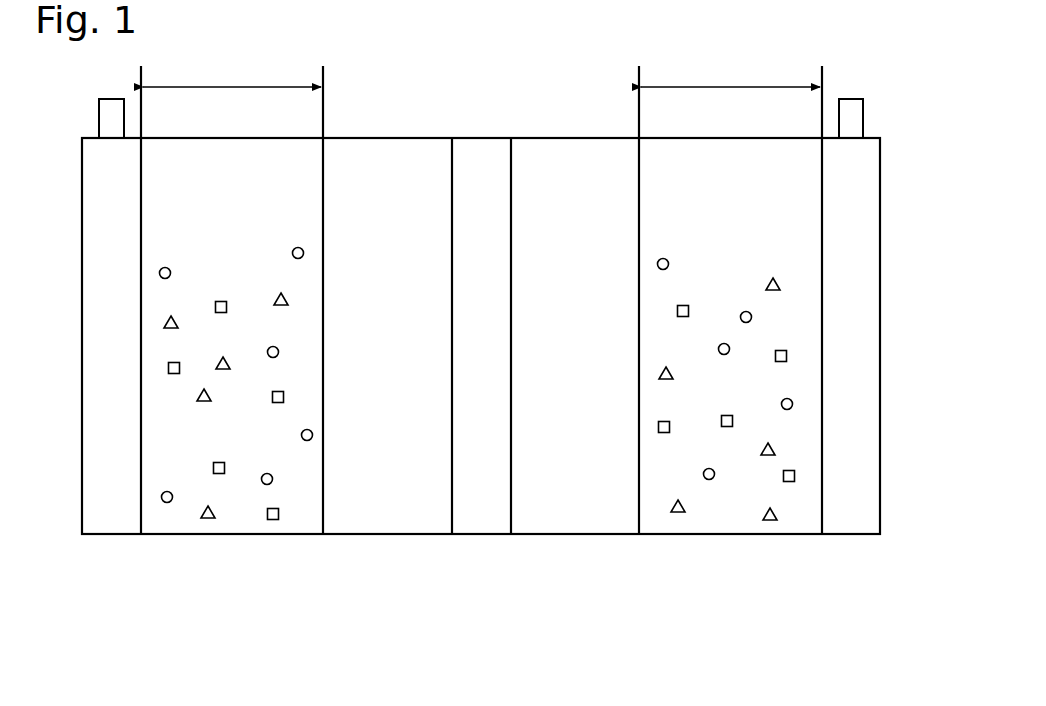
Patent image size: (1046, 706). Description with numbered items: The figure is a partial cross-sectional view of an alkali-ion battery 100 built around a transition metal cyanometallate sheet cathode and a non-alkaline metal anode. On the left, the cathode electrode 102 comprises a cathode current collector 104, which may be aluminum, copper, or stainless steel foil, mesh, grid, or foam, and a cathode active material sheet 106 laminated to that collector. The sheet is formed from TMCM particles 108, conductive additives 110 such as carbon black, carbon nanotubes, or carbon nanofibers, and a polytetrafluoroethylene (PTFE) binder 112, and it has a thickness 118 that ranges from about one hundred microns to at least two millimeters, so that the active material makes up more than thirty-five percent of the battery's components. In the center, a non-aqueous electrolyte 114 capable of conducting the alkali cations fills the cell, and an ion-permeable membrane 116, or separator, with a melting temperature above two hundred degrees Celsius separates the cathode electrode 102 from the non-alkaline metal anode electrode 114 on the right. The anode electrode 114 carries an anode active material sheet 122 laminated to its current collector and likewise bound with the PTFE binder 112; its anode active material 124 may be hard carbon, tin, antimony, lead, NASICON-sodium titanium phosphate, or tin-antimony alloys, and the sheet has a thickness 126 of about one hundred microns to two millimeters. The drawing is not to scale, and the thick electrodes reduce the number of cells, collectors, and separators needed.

The battery 100 is at (803, 67).
The cathode electrode 102 is at (82, 542).
The cathode current collector 104 is at (82, 477).
The cathode active material sheet 106 is at (232, 340).
The TMCM particles 108 is at (301, 434).
The conductive additives 110 is at (284, 397).
The PTFE binder 112 is at (178, 323).
The non-alkaline metal anode electrode 114 is at (417, 518).
The ion-permeable membrane 116 is at (476, 143).
The thickness of cathode active material sheet 118 is at (225, 88).
The anode active material sheet 122 is at (730, 340).
The anode active material 124 is at (658, 427).
The thickness of anode active material sheet 126 is at (726, 88).